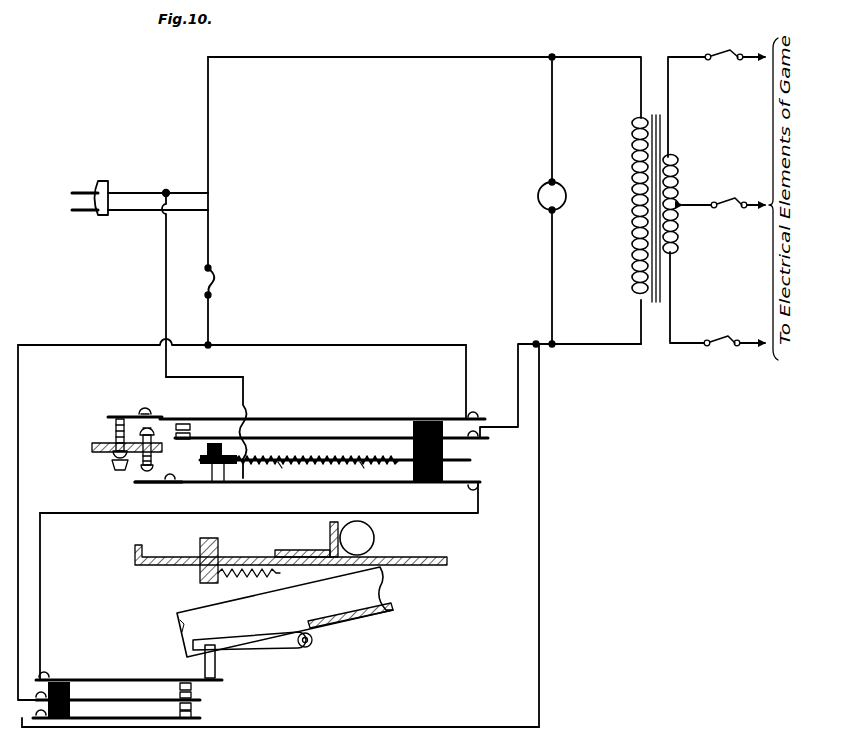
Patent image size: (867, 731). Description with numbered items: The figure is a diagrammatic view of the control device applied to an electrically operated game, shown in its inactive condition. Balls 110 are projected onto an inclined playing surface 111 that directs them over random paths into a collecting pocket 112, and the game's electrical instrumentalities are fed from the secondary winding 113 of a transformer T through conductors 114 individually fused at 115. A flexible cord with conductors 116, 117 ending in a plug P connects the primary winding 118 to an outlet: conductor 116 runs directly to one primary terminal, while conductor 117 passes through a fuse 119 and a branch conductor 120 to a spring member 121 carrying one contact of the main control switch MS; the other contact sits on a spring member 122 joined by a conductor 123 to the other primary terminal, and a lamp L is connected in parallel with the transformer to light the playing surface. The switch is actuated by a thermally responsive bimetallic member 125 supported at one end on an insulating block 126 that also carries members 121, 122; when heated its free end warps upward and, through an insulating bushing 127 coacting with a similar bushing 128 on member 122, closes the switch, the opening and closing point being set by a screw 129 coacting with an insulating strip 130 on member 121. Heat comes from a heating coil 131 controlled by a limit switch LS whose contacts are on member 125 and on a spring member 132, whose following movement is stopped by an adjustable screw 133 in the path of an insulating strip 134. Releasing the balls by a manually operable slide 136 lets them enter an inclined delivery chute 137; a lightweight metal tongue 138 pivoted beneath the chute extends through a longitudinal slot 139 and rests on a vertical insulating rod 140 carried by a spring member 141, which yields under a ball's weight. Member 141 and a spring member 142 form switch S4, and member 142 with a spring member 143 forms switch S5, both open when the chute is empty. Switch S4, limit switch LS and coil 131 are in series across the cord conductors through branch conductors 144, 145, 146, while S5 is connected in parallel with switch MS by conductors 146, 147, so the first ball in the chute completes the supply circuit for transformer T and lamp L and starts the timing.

The plug P is at (108, 183).
The cord conductor 116 is at (186, 192).
The cord conductor 117 is at (192, 212).
The fuse 119 is at (216, 285).
The branch conductor 120 is at (352, 343).
The branch conductor 144 is at (205, 376).
The lamp L is at (568, 192).
The transformer T is at (657, 155).
The primary winding 118 is at (632, 232).
The secondary winding 113 is at (678, 180).
The fuse 115 is at (715, 62).
The conductor 114 is at (749, 61).
The conductor 123 is at (581, 346).
The spring member 121 is at (330, 417).
The spring member 122 is at (300, 437).
The block of insulating material 126 is at (447, 464).
The thermally responsive bimetallic member 125 is at (393, 466).
The electrical heating coil 131 is at (288, 465).
The spring member 132 is at (366, 467).
The insulating bushing 128 is at (206, 449).
The insulating bushing 127 is at (206, 460).
The main control switch MS is at (190, 428).
The limit switch LS is at (230, 468).
The strip of insulating material 130 is at (132, 415).
The screw 129 is at (115, 429).
The conductor 146 is at (20, 472).
The adjustable stop screw 133 is at (143, 470).
The insulating strip 134 is at (162, 484).
The branch conductor 145 is at (42, 592).
The inclined playing surface 111 is at (433, 556).
The collecting pocket 112 is at (380, 566).
The ball 110 is at (377, 534).
The manually operable slide 136 is at (327, 570).
The tongue 138 is at (282, 632).
The inclined delivery chute 137 is at (380, 616).
The longitudinal slot 139 is at (240, 650).
The vertical rod 140 is at (216, 665).
The spring member 141 is at (73, 678).
The spring member 142 is at (100, 698).
The spring member 143 is at (130, 716).
The switch S4 is at (200, 690).
The switch S5 is at (200, 710).
The conductor 147 is at (372, 726).